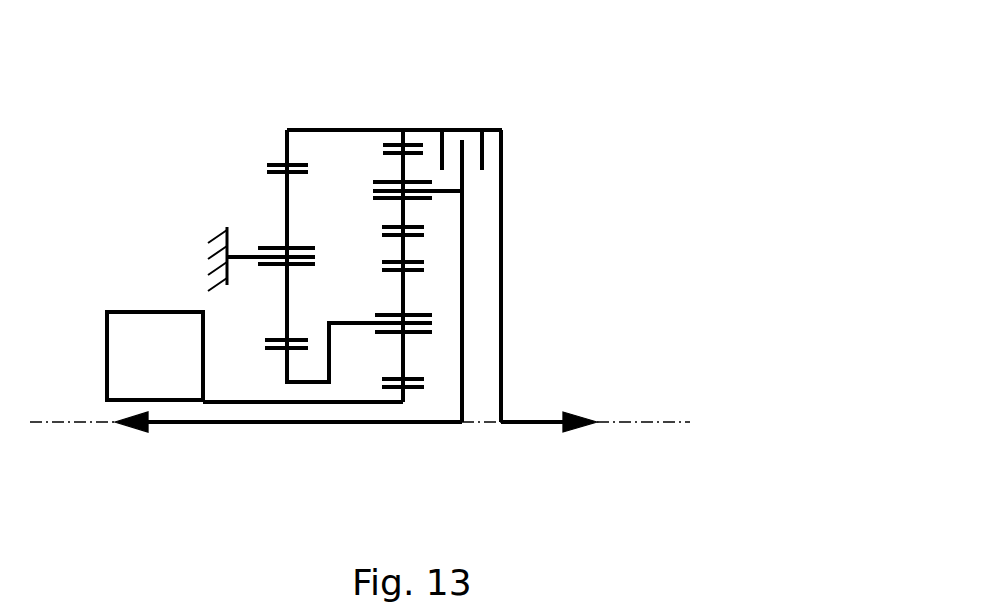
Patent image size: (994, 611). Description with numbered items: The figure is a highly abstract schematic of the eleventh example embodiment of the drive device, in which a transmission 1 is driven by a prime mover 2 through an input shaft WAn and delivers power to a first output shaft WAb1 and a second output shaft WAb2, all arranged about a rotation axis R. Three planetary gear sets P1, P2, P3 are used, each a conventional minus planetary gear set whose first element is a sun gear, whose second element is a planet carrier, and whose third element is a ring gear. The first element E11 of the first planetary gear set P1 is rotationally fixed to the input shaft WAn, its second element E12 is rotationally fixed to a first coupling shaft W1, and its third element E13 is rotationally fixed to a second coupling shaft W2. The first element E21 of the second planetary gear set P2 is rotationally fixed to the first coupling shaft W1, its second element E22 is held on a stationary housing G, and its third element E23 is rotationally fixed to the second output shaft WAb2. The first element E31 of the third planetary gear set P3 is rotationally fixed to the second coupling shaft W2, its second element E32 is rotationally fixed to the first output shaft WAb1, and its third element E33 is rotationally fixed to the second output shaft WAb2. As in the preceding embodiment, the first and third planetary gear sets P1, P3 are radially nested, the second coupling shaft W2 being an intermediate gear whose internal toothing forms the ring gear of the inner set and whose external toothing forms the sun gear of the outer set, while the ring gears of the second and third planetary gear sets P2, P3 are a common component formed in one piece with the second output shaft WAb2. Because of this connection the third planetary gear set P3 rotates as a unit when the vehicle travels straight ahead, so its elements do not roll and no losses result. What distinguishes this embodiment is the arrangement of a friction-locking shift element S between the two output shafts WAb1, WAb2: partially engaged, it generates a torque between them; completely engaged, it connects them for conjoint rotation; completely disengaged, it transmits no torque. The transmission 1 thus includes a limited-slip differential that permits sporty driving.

The transmission 1 is at (137, 118).
The prime mover 2 is at (127, 318).
The housing G is at (215, 236).
The first planetary gear set P1 is at (417, 430).
The second planetary gear set P2 is at (276, 432).
The third planetary gear set P3 is at (417, 108).
The shift element S is at (478, 117).
The first coupling shaft W1 is at (340, 323).
The second coupling shaft W2 is at (400, 248).
The first element of the first planetary gear set E11 is at (402, 406).
The second element of the first planetary gear set E12 is at (432, 323).
The third element of the first planetary gear set E13 is at (424, 263).
The first element of the second planetary gear set E21 is at (288, 365).
The second element of the second planetary gear set E22 is at (250, 250).
The third element of the second planetary gear set E23 is at (284, 160).
The first element of the third planetary gear set E31 is at (424, 231).
The second element of the third planetary gear set E32 is at (372, 190).
The third element of the third planetary gear set E33 is at (391, 143).
The input shaft WAn is at (218, 404).
The first output shaft WAb1 is at (173, 425).
The second output shaft WAb2 is at (529, 425).
The rotation axis R is at (665, 423).